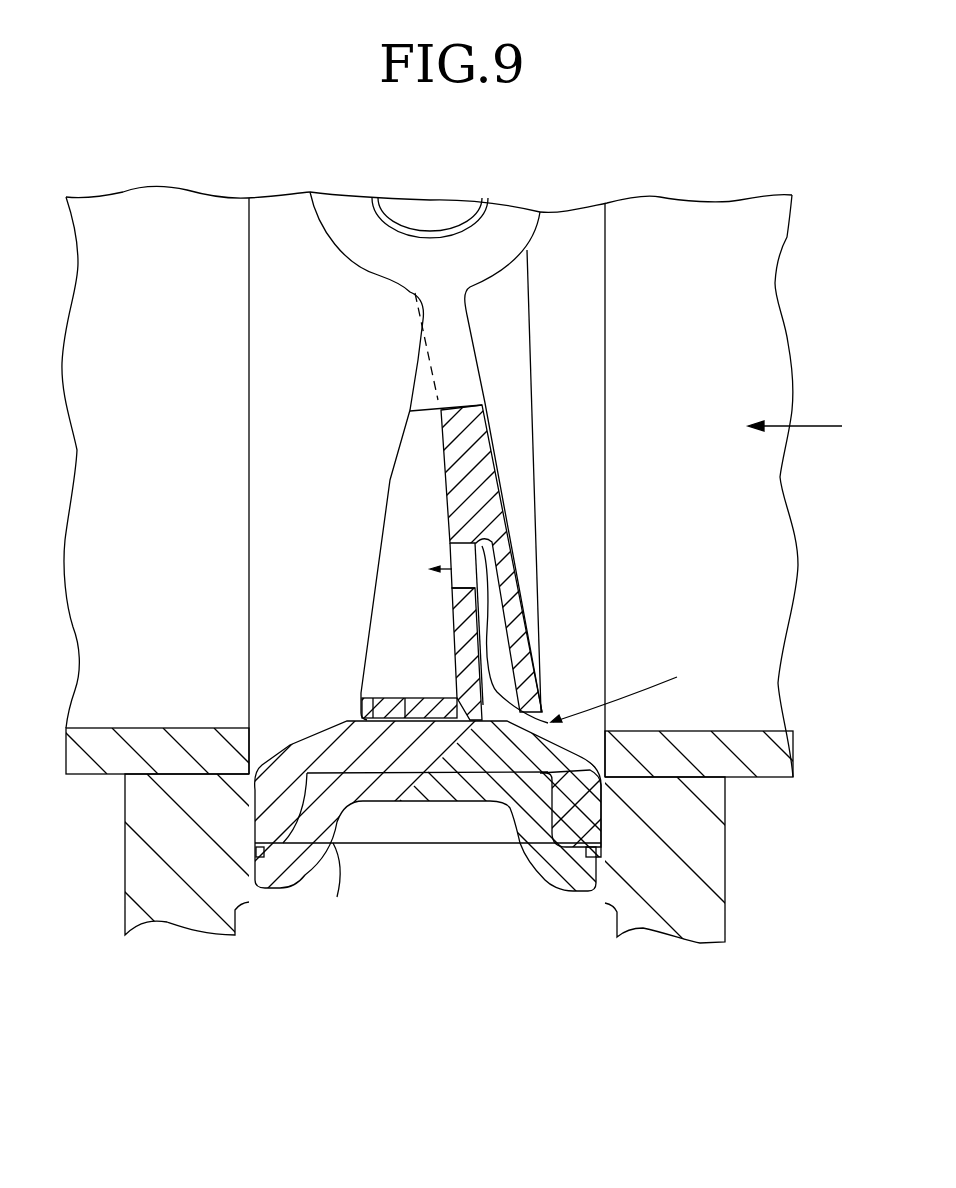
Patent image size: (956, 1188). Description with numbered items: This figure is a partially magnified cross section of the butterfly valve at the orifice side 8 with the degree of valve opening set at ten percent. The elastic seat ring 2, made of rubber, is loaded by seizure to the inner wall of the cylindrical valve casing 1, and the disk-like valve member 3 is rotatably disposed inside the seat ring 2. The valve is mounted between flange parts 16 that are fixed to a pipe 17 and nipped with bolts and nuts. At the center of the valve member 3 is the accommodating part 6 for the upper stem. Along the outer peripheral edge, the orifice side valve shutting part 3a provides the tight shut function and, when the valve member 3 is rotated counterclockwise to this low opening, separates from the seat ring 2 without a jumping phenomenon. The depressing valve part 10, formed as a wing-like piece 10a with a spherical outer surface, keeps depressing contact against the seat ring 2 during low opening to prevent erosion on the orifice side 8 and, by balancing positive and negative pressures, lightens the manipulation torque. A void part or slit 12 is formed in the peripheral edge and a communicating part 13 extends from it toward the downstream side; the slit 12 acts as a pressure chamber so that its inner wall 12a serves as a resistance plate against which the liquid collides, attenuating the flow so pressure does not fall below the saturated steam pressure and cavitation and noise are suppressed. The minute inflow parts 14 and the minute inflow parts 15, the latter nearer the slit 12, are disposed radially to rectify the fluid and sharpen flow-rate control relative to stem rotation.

The valve casing 1 is at (341, 848).
The elastic seat ring 2 is at (446, 758).
The valve member 3 is at (425, 350).
The orifice side valve shutting part 3a is at (527, 687).
The accommodating part 6 is at (466, 204).
The orifice side 8 is at (553, 712).
The depressing valve part 10 is at (480, 693).
The wing-like piece 10a is at (422, 713).
The void part (slit) 12 is at (497, 600).
The inner wall of the void part 12a is at (505, 716).
The communicating part (communicating hole) 13 is at (462, 583).
The minute inflow part 14 is at (390, 707).
The minute inflow part 15 is at (450, 700).
The flange part 16 is at (192, 918).
The pipe 17 is at (80, 776).